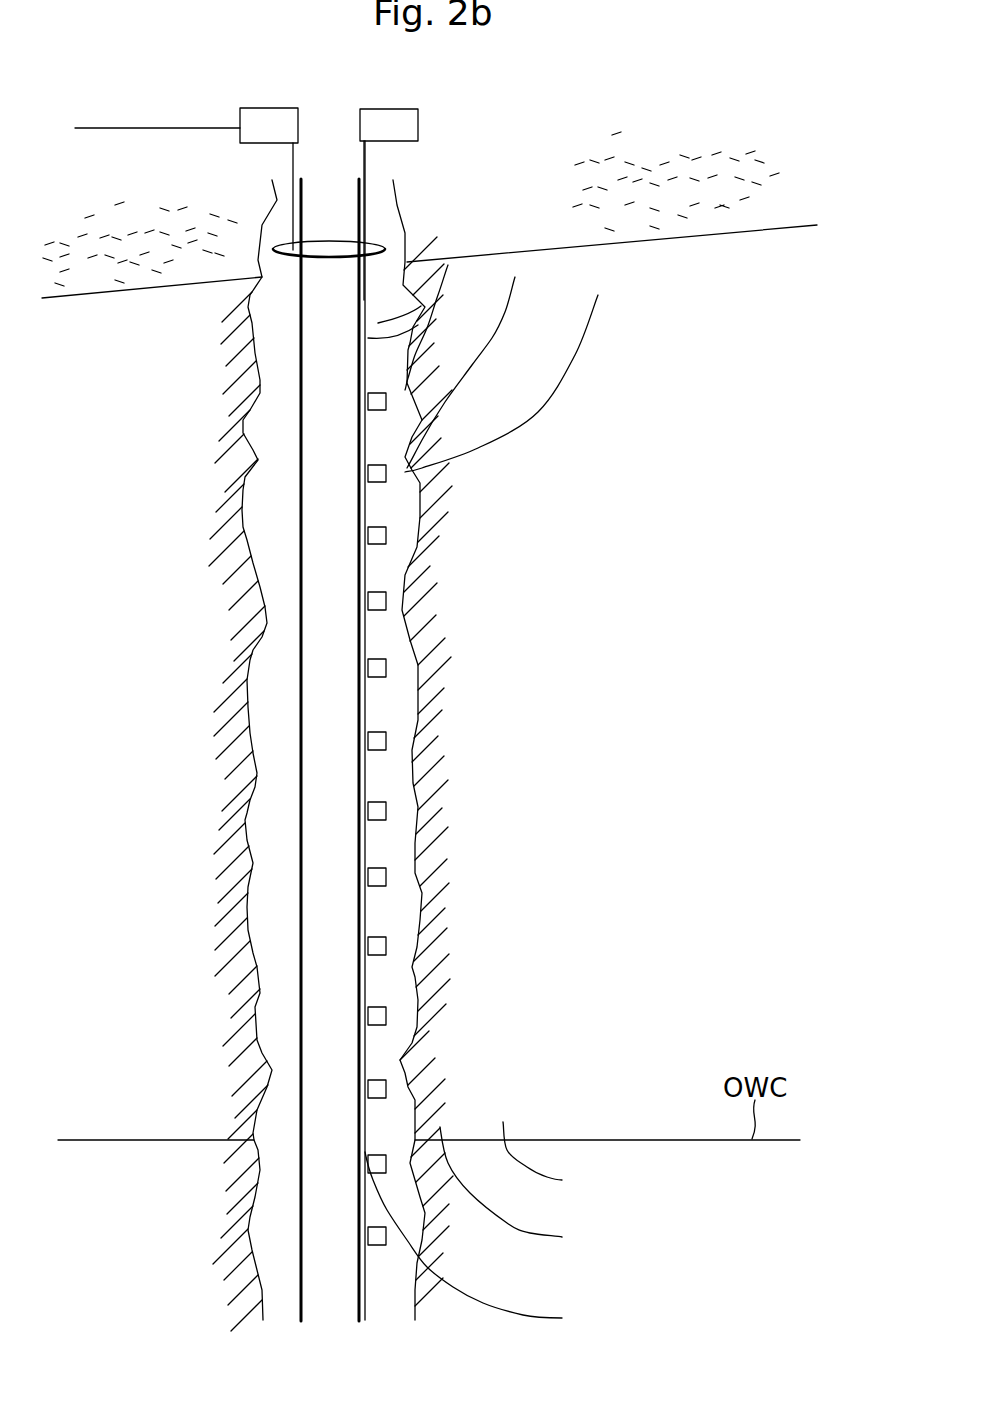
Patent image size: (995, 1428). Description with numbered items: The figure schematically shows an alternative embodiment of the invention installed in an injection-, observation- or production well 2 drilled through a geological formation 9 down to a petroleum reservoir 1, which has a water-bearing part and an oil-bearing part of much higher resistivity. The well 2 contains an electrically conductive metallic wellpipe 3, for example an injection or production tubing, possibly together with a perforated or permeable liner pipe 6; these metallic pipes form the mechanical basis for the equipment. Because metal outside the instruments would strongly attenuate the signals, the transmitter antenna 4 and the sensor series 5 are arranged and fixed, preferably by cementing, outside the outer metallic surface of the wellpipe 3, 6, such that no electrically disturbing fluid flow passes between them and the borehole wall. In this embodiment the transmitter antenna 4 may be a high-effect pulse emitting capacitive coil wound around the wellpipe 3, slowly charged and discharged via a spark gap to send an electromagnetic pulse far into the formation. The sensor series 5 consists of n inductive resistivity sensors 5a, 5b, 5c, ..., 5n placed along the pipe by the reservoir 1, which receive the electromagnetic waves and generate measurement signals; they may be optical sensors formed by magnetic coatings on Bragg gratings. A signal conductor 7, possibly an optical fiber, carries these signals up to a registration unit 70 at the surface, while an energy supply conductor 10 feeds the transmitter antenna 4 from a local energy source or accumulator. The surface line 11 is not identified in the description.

The reservoir 1 is at (165, 879).
The well 2 is at (282, 213).
The wellpipe 3 is at (397, 731).
The transmitter antenna 4 is at (385, 249).
The sensor series 5 is at (457, 869).
The resistivity sensor 5a is at (386, 402).
The resistivity sensor 5b is at (386, 478).
The resistivity sensor 5c is at (386, 538).
The resistivity sensor 5n is at (375, 1246).
The liner pipe 6 is at (361, 212).
The signal conductor 7 is at (420, 321).
The geological formation 9 is at (105, 708).
The energy supply conductor 10 is at (295, 158).
The surface return line 11 is at (102, 128).
The registration unit 70 is at (420, 123).